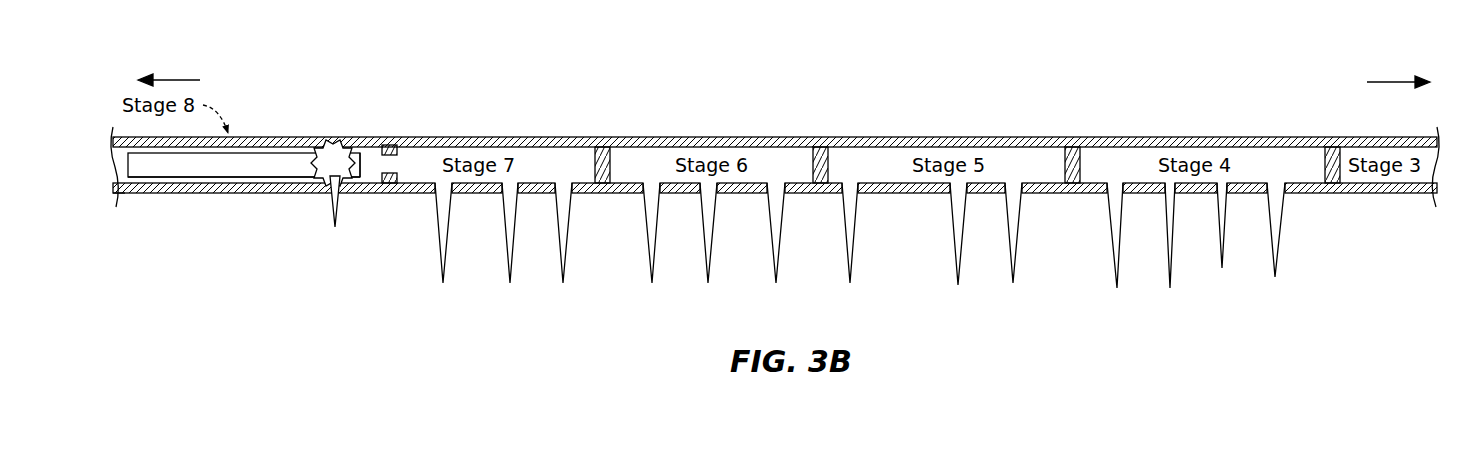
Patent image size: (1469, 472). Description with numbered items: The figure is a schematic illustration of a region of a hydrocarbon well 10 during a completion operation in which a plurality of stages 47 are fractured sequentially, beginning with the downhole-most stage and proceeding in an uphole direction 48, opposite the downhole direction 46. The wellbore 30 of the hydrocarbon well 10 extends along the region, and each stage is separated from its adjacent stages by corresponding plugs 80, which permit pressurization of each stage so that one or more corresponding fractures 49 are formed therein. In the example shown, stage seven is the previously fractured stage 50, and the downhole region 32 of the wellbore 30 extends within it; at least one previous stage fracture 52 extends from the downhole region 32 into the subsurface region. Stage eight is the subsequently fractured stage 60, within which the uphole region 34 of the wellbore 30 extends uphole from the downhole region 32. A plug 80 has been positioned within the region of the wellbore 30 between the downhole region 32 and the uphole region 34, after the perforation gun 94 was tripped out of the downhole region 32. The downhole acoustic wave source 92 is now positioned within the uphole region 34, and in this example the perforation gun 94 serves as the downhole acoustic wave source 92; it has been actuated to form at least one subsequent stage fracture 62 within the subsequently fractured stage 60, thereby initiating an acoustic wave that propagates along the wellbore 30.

The hydrocarbon well 10 is at (130, 68).
The wellbore 30 is at (531, 148).
The downhole region 32 is at (430, 157).
The uphole region 34 is at (281, 153).
The downhole direction 46 is at (1392, 80).
The stages 47 is at (168, 257).
The uphole direction 48 is at (176, 79).
The fractures 49 is at (333, 230).
The previously fractured stage 50 is at (475, 278).
The previous stage fracture 52 is at (563, 270).
The subsequently fractured stage 60 is at (153, 205).
The subsequent stage fracture 62 is at (339, 202).
The plug 80 is at (390, 146).
The downhole acoustic wave source 92 is at (238, 194).
The perforation gun 94 is at (212, 194).